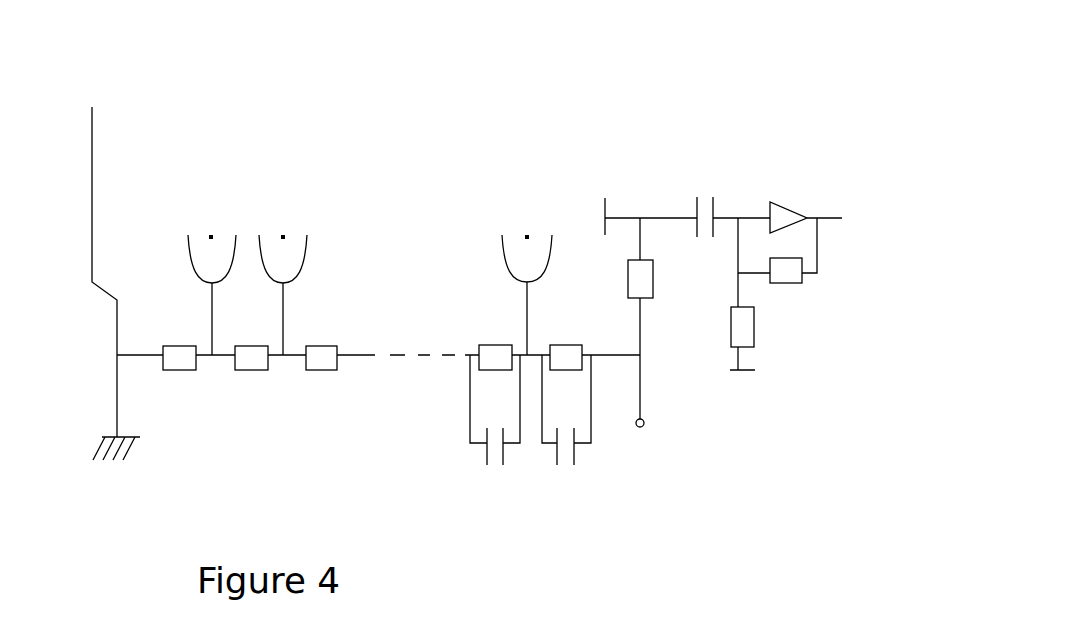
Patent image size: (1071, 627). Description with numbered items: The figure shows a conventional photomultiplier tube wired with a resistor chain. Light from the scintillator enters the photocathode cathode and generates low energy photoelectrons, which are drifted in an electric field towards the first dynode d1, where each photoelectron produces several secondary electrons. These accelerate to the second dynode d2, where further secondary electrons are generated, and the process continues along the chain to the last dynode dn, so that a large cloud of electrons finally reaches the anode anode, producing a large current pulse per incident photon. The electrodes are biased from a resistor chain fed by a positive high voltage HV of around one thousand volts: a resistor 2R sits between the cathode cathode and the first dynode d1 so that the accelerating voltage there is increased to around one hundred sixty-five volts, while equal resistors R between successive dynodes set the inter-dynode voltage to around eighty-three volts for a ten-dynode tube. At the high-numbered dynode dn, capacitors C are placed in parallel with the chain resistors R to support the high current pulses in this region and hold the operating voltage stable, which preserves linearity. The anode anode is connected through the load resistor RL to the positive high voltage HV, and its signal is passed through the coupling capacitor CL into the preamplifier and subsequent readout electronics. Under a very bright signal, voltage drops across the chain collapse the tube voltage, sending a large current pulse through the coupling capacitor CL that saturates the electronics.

The photocathode cathode is at (117, 80).
The first dynode d1 is at (212, 274).
The second dynode d2 is at (283, 274).
The dynode dn is at (527, 274).
The element anode is at (635, 204).
The resistor 2R is at (179, 379).
The resistor R is at (408, 379).
The capacitor C is at (530, 435).
The load resistor RL is at (659, 318).
The coupling capacitor CL is at (727, 198).
The positive high voltage HV is at (639, 438).